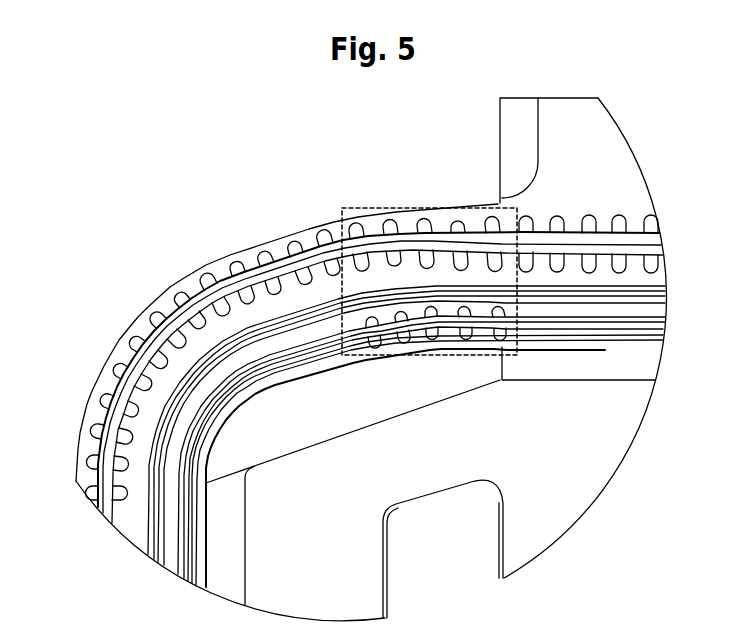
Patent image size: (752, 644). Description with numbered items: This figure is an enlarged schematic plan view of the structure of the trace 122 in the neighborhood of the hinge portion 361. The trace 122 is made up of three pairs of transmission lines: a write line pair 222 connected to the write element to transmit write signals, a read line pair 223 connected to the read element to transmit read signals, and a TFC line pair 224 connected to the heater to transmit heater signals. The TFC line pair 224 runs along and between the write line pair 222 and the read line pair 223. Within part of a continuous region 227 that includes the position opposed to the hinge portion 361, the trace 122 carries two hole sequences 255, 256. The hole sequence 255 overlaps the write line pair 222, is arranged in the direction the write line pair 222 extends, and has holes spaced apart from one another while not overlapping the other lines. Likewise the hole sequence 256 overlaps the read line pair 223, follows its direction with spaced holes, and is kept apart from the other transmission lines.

The trace 122 is at (305, 229).
The write line pair 222 is at (268, 262).
The continuous region 227 is at (382, 213).
The hole sequence 255 is at (441, 219).
The hole sequence 256 is at (408, 344).
The TFC line pair 224 is at (200, 368).
The read line pair 223 is at (262, 362).
The hinge portion 361 is at (443, 492).